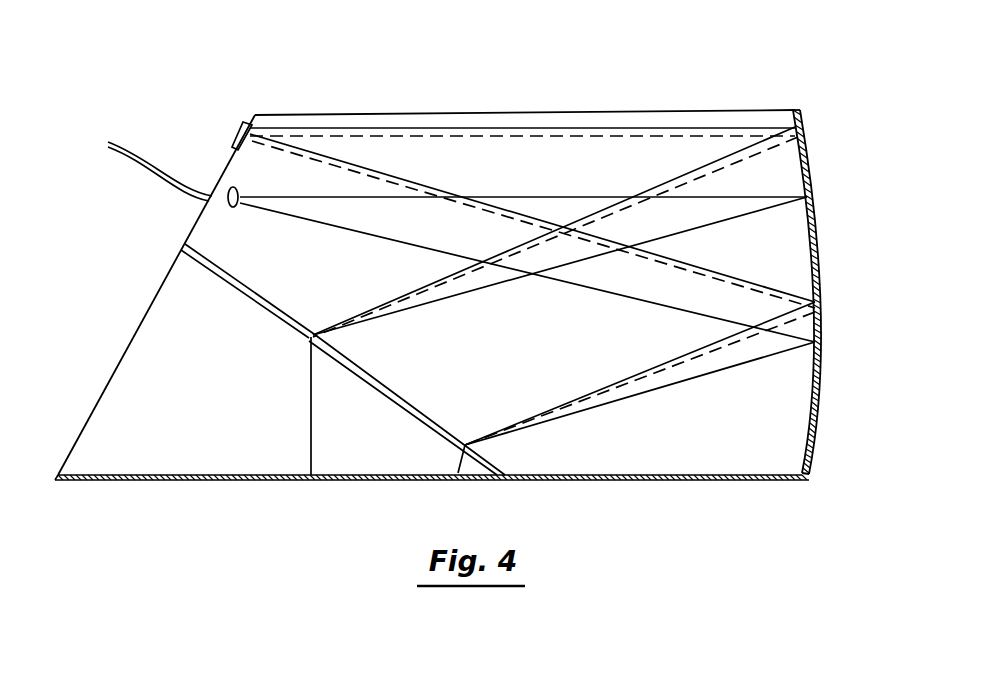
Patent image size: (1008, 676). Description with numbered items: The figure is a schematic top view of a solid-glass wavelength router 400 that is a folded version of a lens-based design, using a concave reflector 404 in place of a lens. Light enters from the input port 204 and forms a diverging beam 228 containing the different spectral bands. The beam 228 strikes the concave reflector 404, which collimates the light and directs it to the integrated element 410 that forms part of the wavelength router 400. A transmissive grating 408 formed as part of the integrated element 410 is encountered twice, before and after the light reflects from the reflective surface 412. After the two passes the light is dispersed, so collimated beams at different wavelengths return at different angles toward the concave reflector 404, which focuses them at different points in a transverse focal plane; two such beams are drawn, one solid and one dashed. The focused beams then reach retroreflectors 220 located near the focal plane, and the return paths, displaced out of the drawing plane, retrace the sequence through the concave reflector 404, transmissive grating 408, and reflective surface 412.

The wavelength router 400 is at (557, 78).
The retroreflectors 220 is at (242, 130).
The input port 204 is at (206, 203).
The diverging beam 228 is at (238, 208).
The concave reflector 404 is at (818, 245).
The integrated element 410 is at (153, 338).
The transmissive grating 408 is at (393, 390).
The reflective surface 412 is at (217, 480).